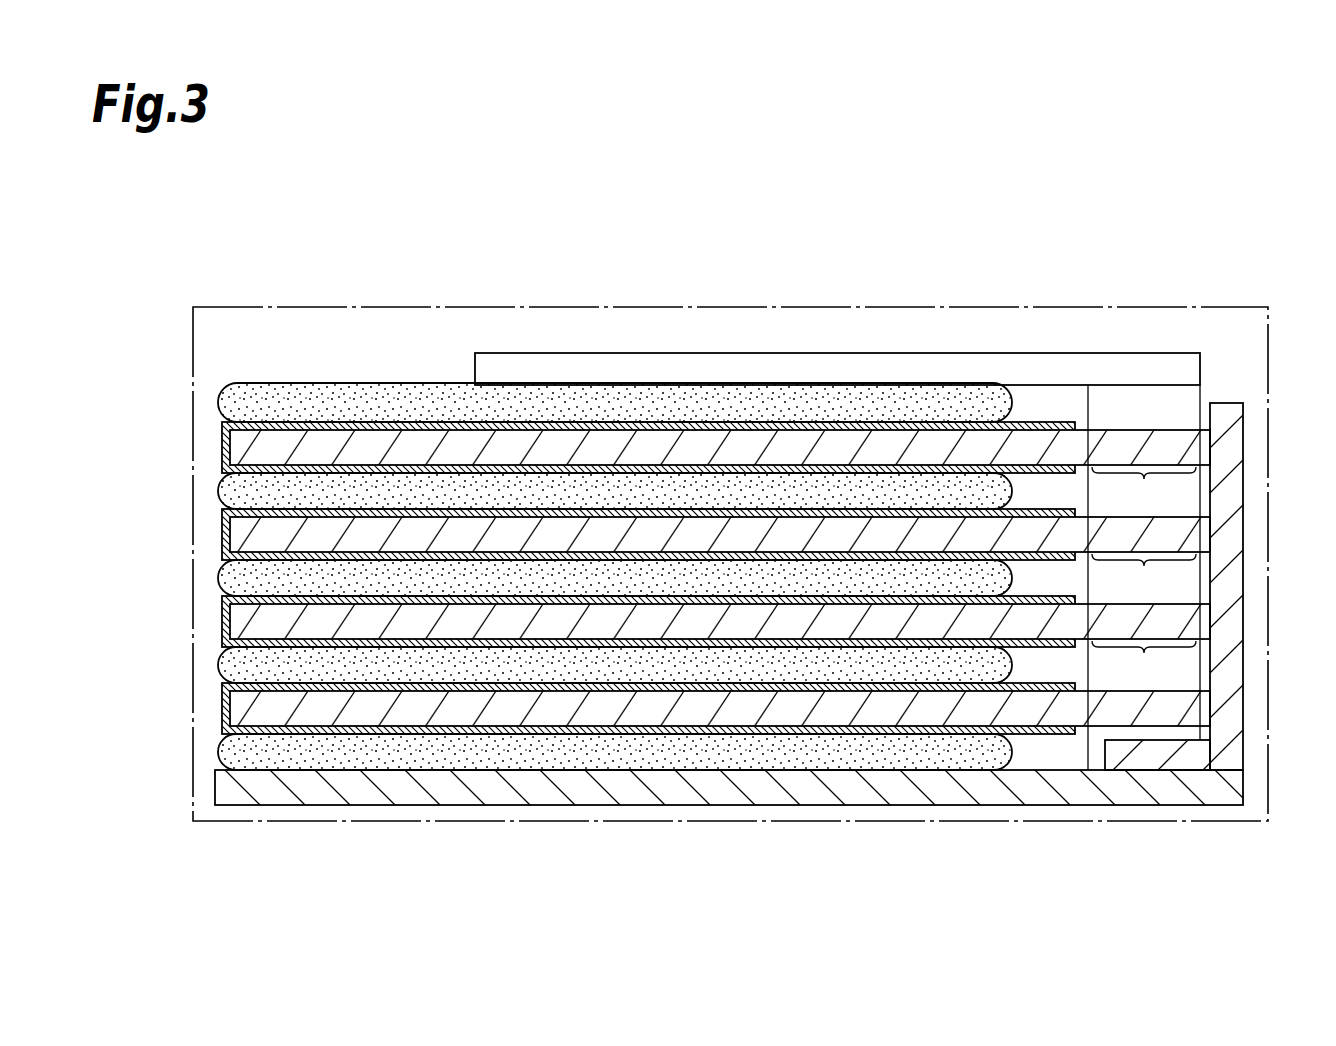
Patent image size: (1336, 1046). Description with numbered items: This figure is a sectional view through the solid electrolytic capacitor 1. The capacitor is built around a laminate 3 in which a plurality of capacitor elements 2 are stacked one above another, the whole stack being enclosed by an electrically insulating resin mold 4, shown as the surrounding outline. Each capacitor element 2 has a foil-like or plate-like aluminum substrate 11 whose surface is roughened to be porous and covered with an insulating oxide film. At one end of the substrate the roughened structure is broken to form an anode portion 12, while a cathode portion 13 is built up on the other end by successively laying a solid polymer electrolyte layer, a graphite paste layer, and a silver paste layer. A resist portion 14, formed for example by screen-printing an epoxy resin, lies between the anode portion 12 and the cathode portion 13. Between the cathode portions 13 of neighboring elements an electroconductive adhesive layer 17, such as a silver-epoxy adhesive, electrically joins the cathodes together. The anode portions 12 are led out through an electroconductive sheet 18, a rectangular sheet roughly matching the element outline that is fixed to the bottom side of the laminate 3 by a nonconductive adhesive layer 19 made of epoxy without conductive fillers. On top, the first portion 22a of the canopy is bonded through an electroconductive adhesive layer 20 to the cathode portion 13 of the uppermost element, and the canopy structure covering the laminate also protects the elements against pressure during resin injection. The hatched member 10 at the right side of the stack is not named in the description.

The solid electrolytic capacitor 1 is at (1090, 252).
The capacitor element 2 is at (220, 453).
The laminate 3 is at (130, 412).
The resin mold 4 is at (233, 306).
The current collector plate 10 is at (1228, 577).
The aluminum substrate 11 is at (1195, 447).
The anode portion 12 is at (1144, 600).
The cathode portion 13 is at (298, 516).
The resist portion 14 is at (1053, 513).
The electroconductive adhesive layer 17 is at (218, 482).
The electroconductive sheet 18 is at (677, 790).
The nonconductive adhesive layer 19 is at (480, 758).
The electroconductive adhesive layer 20 is at (392, 388).
The first portion of canopy 22a is at (891, 367).